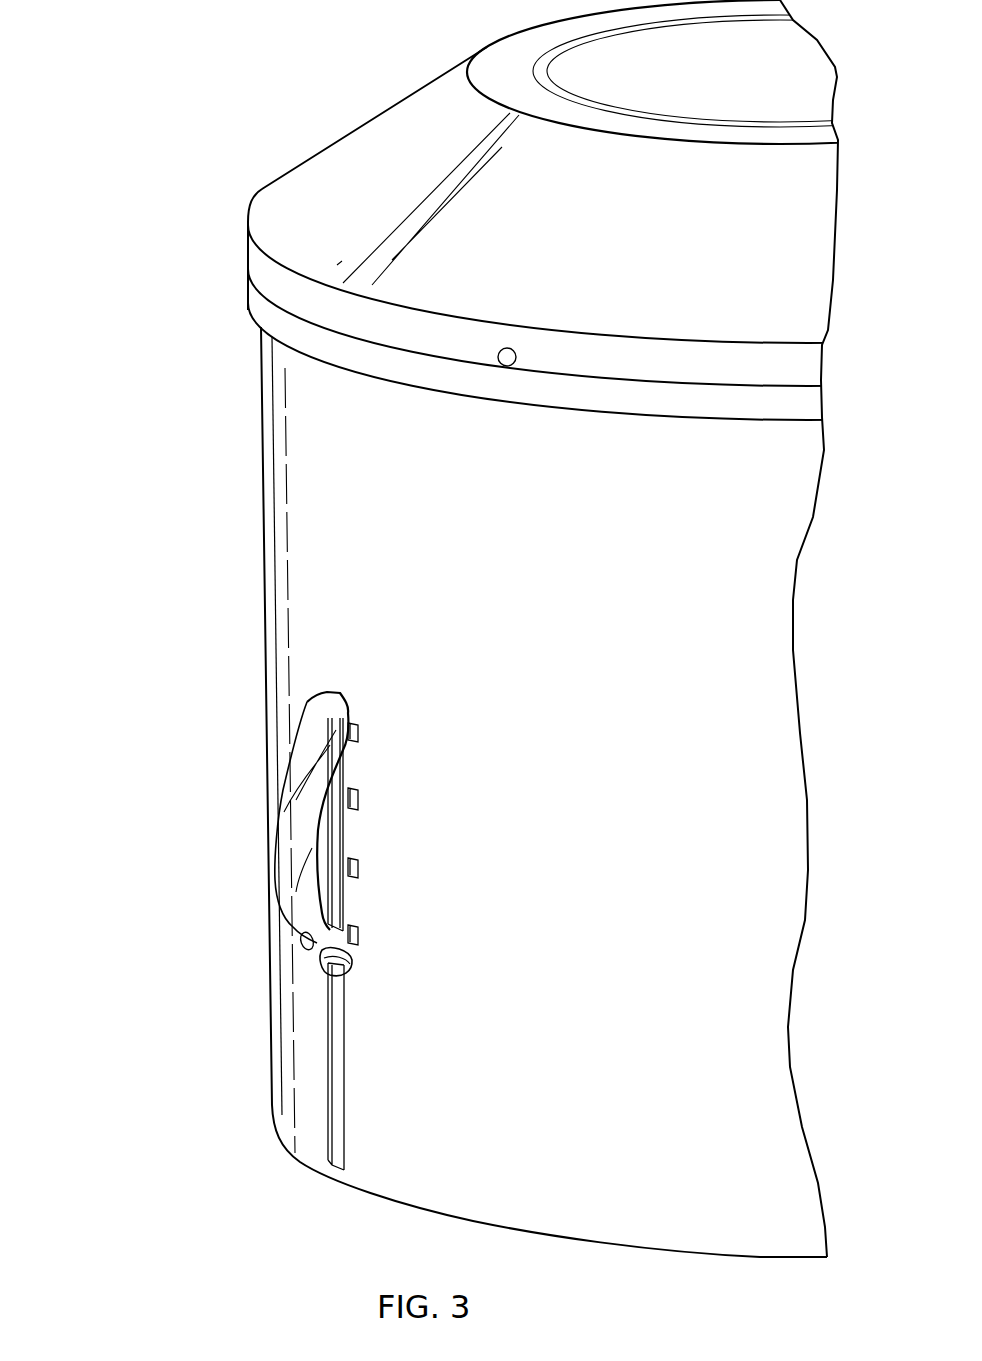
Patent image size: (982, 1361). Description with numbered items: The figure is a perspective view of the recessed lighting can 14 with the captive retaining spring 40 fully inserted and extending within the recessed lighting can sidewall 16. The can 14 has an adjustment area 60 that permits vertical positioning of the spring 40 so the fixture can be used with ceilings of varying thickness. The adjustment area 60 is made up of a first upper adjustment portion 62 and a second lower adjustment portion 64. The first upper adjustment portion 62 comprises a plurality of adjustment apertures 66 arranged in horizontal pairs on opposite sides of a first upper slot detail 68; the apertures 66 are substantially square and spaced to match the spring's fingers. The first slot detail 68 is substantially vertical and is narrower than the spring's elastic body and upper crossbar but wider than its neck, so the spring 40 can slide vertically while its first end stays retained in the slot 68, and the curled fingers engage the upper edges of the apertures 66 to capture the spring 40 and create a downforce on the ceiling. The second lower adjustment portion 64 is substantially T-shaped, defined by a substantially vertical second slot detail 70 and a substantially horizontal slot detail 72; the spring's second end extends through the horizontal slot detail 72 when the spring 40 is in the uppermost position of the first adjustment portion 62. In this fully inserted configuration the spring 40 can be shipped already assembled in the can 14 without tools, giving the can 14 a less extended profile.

The recessed lighting can 14 is at (268, 145).
The recessed lighting can sidewall 16 is at (462, 649).
The captive retaining spring 40 is at (310, 743).
The adjustment area 60 is at (314, 923).
The first upper adjustment portion 62 is at (432, 811).
The second lower adjustment portion 64 is at (394, 1066).
The adjustment apertures 66 is at (359, 730).
The first upper slot detail 68 is at (342, 832).
The second slot detail 70 is at (345, 1110).
The horizontal slot detail 72 is at (350, 965).